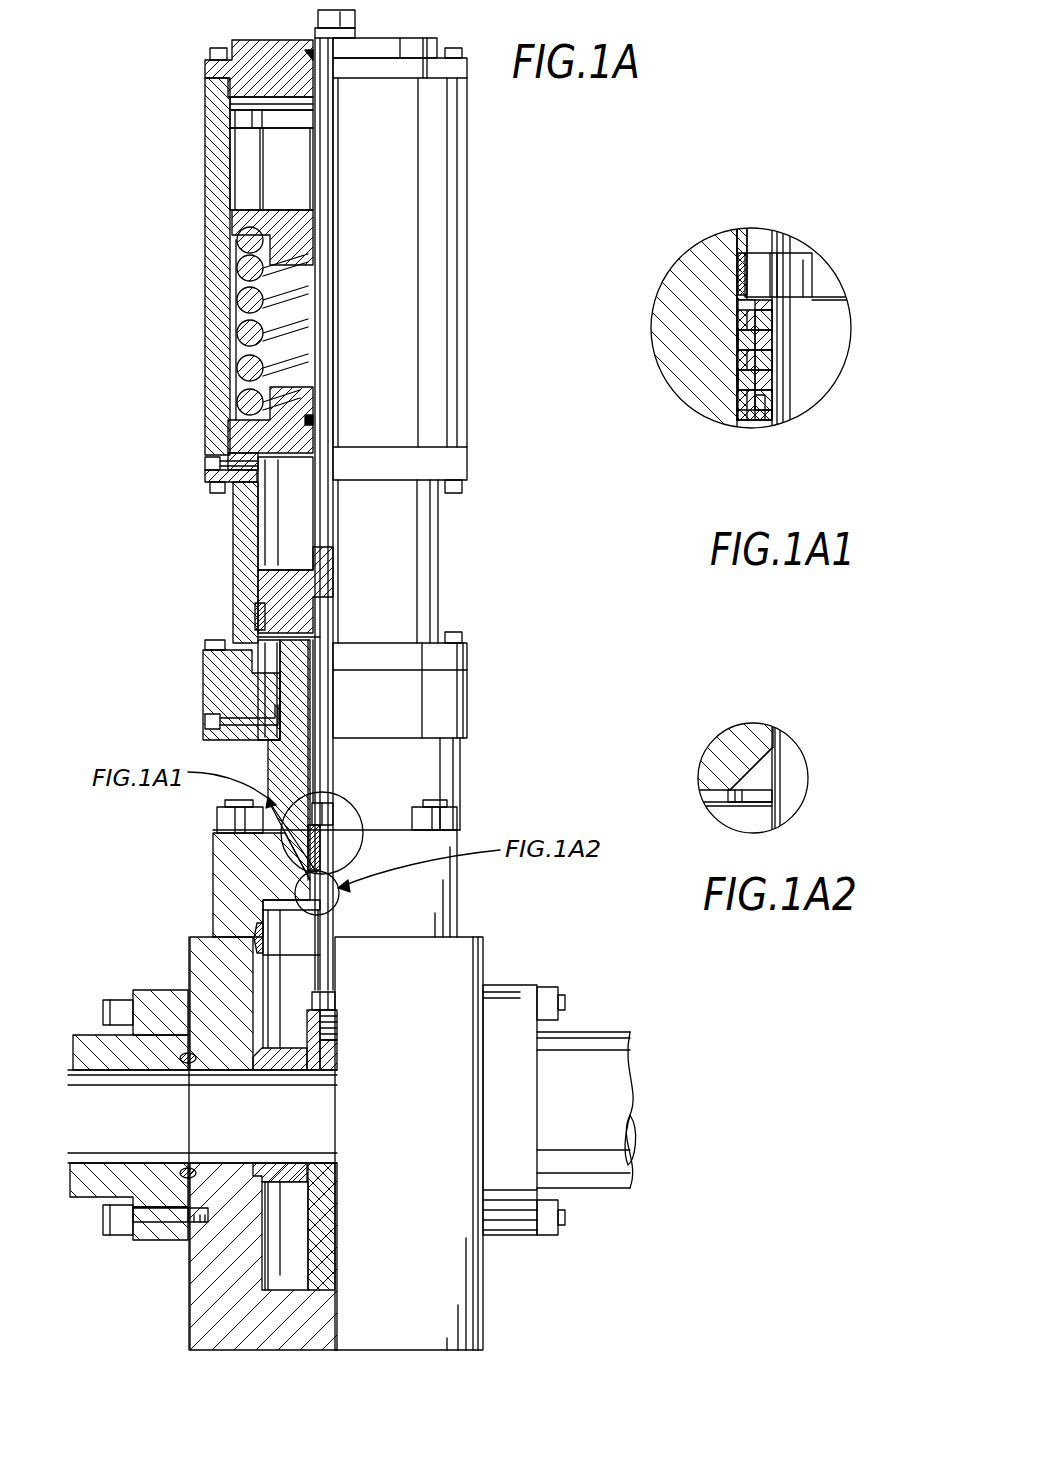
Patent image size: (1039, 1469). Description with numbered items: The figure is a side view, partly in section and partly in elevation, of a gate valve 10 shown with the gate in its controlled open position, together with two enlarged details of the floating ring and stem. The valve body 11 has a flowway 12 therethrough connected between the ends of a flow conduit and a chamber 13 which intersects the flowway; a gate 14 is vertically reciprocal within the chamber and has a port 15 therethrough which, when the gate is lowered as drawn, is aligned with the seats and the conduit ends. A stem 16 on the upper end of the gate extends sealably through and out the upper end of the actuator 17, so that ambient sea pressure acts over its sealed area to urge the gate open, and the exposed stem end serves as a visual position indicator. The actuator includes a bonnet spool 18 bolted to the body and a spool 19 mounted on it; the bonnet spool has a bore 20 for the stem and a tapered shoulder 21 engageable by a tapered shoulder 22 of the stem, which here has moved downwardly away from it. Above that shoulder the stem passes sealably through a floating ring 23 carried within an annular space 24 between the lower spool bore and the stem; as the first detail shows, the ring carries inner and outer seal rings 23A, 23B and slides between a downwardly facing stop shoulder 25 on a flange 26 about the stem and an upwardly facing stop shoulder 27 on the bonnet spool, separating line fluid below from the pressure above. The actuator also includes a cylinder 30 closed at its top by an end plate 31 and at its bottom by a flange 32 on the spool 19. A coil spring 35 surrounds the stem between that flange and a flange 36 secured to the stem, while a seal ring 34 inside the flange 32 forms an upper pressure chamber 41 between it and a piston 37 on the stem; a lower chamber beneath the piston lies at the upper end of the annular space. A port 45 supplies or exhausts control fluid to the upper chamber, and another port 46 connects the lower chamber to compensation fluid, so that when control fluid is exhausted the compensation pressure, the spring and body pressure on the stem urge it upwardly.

In FIG. 1A, the valve 10 is at (213, 866).
In FIG. 1A, the valve body 11 is at (483, 1305).
In FIG. 1A, the flowway 12 is at (193, 1133).
In FIG. 1A, the chamber 13 is at (290, 1270).
In FIG. 1A, the gate 14 is at (300, 1237).
In FIG. 1A, the port 15 is at (315, 1132).
In FIG. 1A, the stem 16 is at (324, 1000).
In FIG. 1A, the actuator 17 is at (440, 565).
In FIG. 1A, the bonnet spool 18 is at (463, 896).
In FIG. 1A, the spool 19 is at (233, 576).
In FIG. 1A, the bore 20 is at (313, 878).
In FIG. 1A, the tapered shoulder 21 is at (300, 887).
In FIG. 1A2, the tapered shoulder 21 is at (722, 750).
In FIG. 1A, the tapered shoulder 22 is at (307, 990).
In FIG. 1A1, the floating ring 23 is at (772, 343).
In FIG. 1A1, the inner seal ring 23A is at (772, 377).
In FIG. 1A1, the outer seal ring 23B is at (747, 382).
In FIG. 1A, the annular space 24 is at (315, 718).
In FIG. 1A1, the annular space 24 is at (756, 242).
In FIG. 1A1, the stop shoulder 25 is at (764, 298).
In FIG. 1A1, the flange 26 is at (745, 280).
In FIG. 1A1, the stop shoulder 27 is at (760, 421).
In FIG. 1A, the cylinder 30 is at (467, 246).
In FIG. 1A, the end plate 31 is at (246, 40).
In FIG. 1A, the flange 32 is at (298, 386).
In FIG. 1A, the seal ring 34 is at (312, 422).
In FIG. 1A, the coil spring 35 is at (270, 306).
In FIG. 1A, the flange 36 is at (255, 210).
In FIG. 1A, the piston 37 is at (288, 570).
In FIG. 1A, the upper pressure chamber 41 is at (291, 507).
In FIG. 1A, the port 45 is at (205, 464).
In FIG. 1A, the port 46 is at (205, 722).